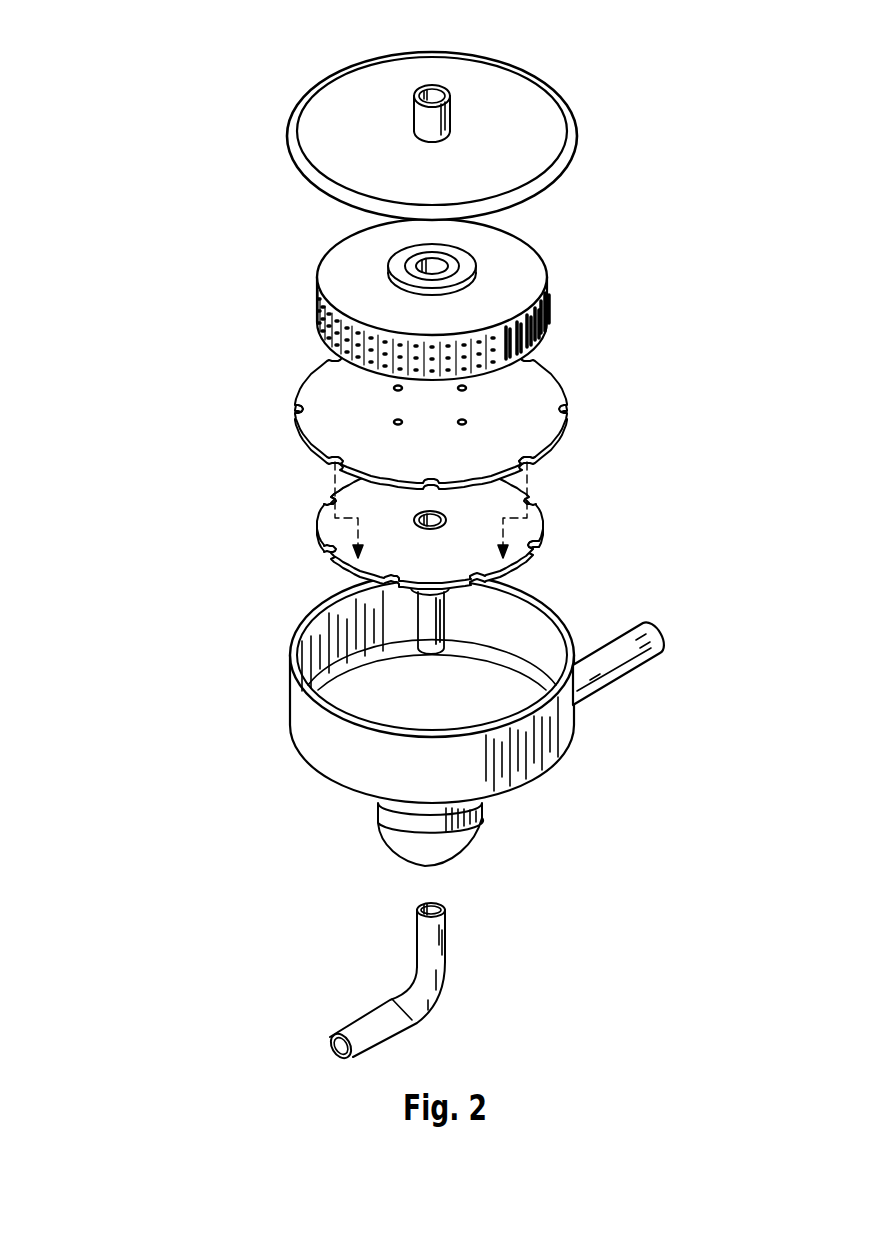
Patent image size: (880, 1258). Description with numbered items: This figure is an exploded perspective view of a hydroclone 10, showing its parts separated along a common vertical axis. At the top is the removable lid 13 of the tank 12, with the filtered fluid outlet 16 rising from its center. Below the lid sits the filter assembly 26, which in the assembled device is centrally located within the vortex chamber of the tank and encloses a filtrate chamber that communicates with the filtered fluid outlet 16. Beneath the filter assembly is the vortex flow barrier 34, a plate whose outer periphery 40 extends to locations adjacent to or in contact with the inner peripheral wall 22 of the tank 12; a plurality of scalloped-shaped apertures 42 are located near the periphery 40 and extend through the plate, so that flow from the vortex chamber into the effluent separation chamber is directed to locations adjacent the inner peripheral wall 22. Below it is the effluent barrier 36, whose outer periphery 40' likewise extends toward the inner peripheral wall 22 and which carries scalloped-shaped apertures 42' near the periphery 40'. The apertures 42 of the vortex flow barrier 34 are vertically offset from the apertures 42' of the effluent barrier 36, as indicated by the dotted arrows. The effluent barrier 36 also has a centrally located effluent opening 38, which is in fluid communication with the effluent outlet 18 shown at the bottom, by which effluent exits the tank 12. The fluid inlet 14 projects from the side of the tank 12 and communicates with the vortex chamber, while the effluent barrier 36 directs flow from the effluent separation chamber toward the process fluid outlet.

The hydroclone 10 is at (189, 211).
The tank 12 is at (562, 748).
The removable lid 13 is at (360, 90).
The fluid inlet 14 is at (638, 668).
The filtered fluid outlet 16 is at (440, 98).
The effluent outlet 18 is at (446, 938).
The inner peripheral wall 22 is at (308, 652).
The filter assembly 26 is at (320, 322).
The vortex flow barrier 34 is at (550, 383).
The effluent barrier 36 is at (548, 505).
The effluent opening 38 is at (357, 580).
The outer periphery 40 is at (494, 496).
The outer periphery 40' is at (594, 548).
The apertures 42 is at (257, 415).
The apertures 42' is at (275, 504).